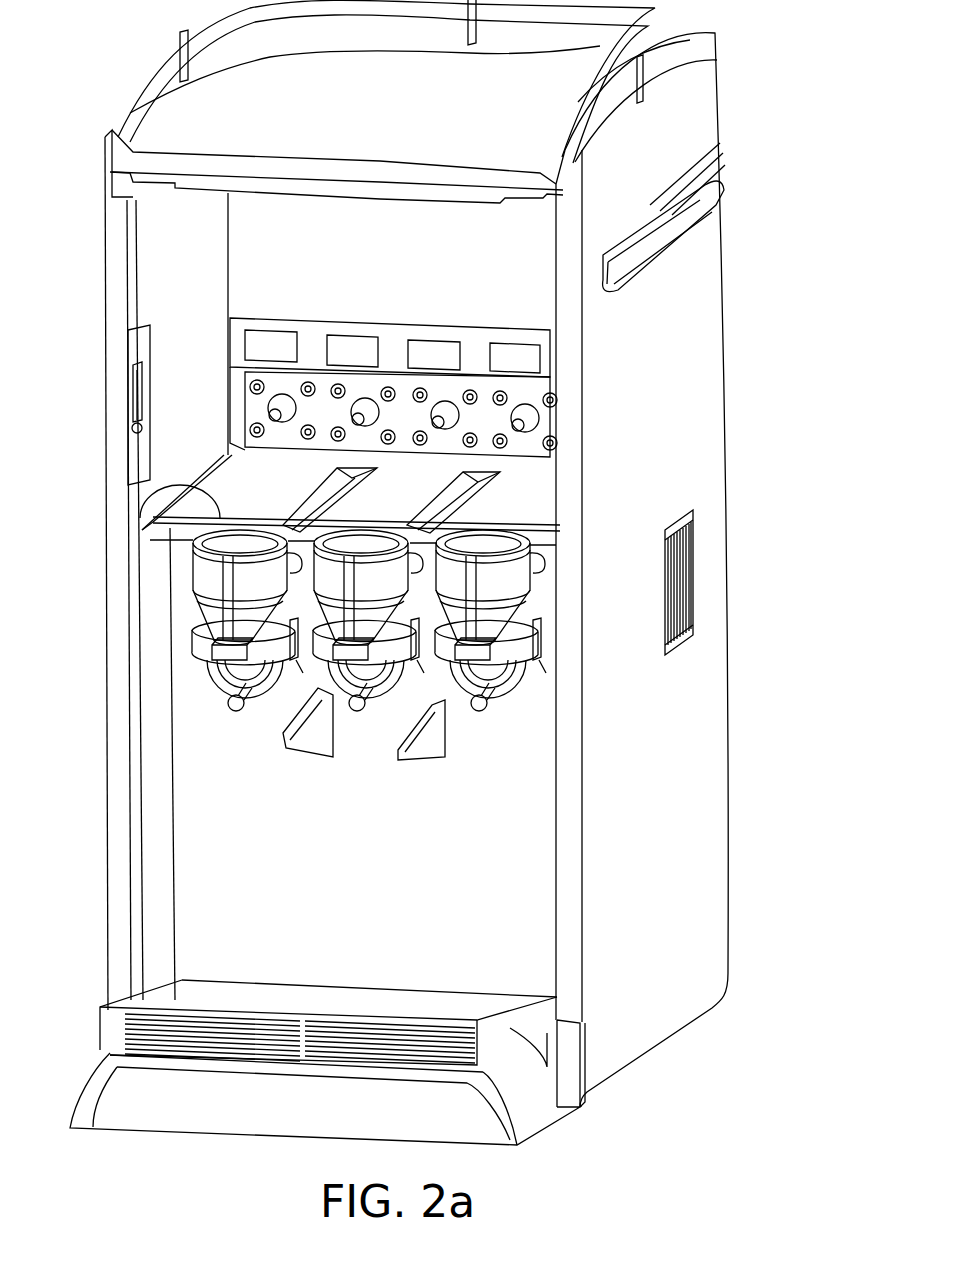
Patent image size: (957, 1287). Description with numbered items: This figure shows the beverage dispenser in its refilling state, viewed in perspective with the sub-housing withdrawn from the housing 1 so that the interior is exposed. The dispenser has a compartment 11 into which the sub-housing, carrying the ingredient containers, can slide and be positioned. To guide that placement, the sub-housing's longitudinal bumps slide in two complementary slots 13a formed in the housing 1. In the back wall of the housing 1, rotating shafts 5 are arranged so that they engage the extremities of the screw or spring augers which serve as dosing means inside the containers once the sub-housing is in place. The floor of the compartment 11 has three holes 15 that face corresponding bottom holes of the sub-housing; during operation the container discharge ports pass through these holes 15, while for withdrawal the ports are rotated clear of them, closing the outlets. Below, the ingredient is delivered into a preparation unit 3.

The housing 1 is at (172, 260).
The compartment 11 is at (333, 278).
The rotating shafts 5 is at (545, 415).
The complementary slots 13a is at (540, 470).
The holes 15 is at (200, 468).
The preparation unit 3 is at (212, 578).